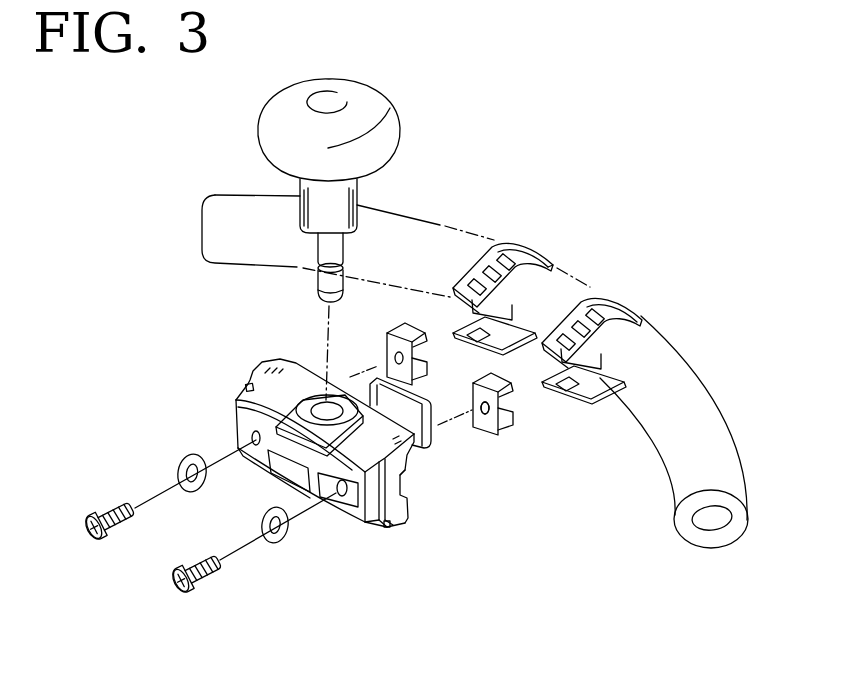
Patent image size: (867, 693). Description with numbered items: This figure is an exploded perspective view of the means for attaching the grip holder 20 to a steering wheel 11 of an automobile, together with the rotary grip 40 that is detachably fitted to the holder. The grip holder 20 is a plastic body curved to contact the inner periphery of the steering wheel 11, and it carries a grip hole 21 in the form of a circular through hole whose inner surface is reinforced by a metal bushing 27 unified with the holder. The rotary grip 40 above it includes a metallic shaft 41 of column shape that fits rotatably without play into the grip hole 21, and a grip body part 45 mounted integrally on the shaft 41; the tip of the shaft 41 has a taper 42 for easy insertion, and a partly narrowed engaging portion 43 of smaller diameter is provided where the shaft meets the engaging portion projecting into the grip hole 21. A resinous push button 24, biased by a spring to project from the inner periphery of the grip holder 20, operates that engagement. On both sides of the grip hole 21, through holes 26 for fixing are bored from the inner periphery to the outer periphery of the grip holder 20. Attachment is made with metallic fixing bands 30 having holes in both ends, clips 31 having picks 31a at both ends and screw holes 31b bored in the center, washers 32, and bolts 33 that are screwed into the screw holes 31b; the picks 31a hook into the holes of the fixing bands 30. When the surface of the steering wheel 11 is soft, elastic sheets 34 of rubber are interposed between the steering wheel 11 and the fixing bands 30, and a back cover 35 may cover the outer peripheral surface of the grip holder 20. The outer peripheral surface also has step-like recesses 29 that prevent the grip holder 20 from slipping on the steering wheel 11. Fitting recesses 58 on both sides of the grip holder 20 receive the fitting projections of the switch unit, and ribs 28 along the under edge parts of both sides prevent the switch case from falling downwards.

The steering wheel 11 is at (702, 386).
The grip holder 20 is at (257, 376).
The grip hole 21 is at (323, 406).
The push button 24 is at (279, 476).
The through holes 26 is at (342, 497).
The metal bushing 27 is at (290, 407).
The ribs 28 is at (380, 527).
The step-like recesses 29 is at (408, 503).
The fixing bands 30 is at (537, 247).
The clips 31 is at (500, 428).
The picks 31a is at (502, 405).
The screw holes 31b is at (484, 414).
The washers 32 is at (291, 542).
The bolts 33 is at (197, 592).
The elastic sheets 34 is at (556, 268).
The back cover 35 is at (438, 425).
The rotary grip 40 is at (338, 235).
The shaft 41 is at (313, 248).
The taper 42 is at (320, 298).
The narrowed engaging portion 43 is at (340, 263).
The grip body part 45 is at (290, 103).
The fitting recesses 58 is at (246, 388).